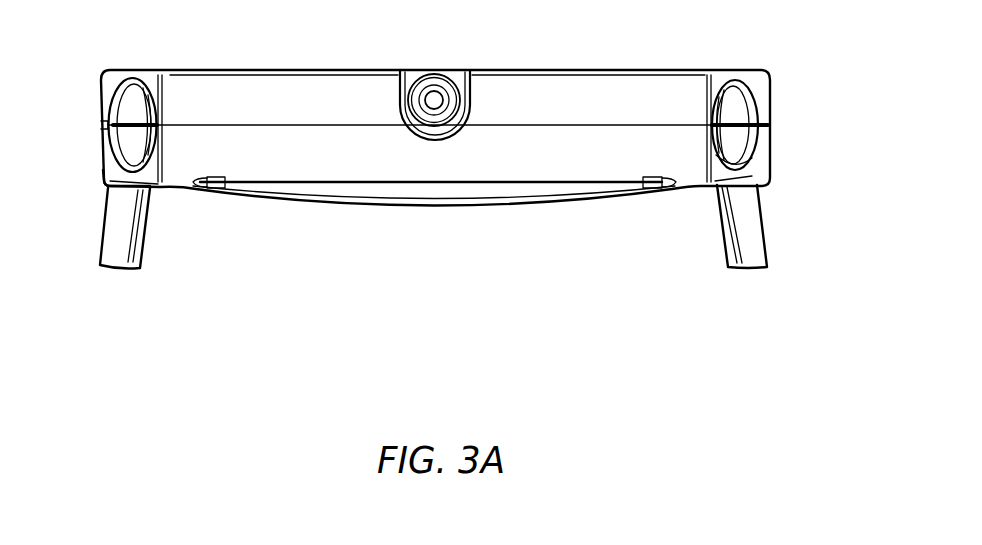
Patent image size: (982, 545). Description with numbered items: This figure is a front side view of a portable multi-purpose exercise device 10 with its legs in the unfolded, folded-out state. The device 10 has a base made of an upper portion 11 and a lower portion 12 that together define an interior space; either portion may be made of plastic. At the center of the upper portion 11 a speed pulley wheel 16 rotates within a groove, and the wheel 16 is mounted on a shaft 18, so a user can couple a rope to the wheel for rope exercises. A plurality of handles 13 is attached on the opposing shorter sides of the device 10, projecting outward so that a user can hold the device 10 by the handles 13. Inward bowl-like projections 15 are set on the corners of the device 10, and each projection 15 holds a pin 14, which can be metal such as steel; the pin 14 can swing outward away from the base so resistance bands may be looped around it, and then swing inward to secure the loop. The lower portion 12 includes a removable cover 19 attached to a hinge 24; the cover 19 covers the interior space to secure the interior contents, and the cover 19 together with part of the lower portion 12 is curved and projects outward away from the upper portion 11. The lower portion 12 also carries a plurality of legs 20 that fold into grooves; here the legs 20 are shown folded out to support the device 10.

The multi-purpose exercise device 10 is at (524, 307).
The upper portion 11 is at (100, 94).
The lower portion 12 is at (106, 179).
The handles 13 is at (769, 124).
The pin 14 is at (752, 133).
The inward bowl-like projections 15 is at (753, 163).
The speed pulley wheel 16 is at (447, 73).
The shaft 18 is at (430, 93).
The removable cover 19 is at (587, 207).
The legs 20 is at (143, 255).
The hinge 24 is at (202, 189).